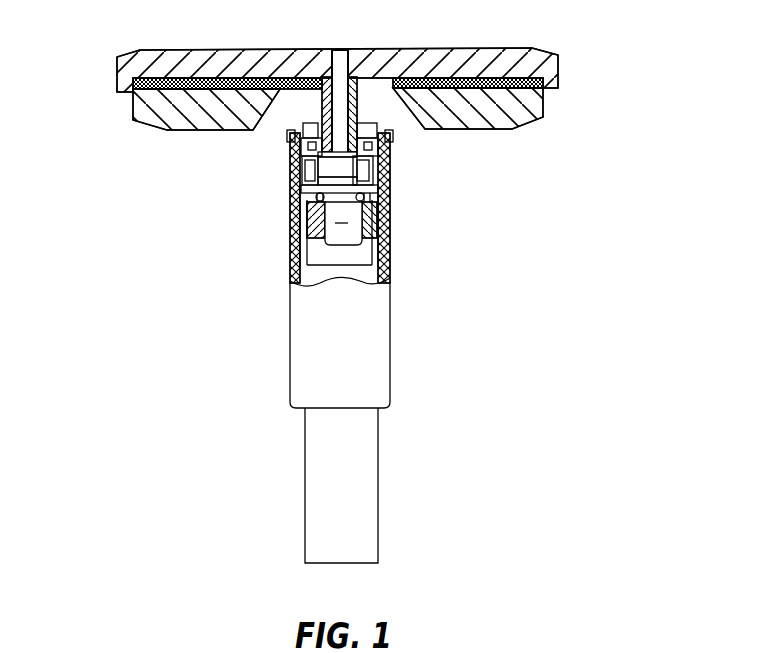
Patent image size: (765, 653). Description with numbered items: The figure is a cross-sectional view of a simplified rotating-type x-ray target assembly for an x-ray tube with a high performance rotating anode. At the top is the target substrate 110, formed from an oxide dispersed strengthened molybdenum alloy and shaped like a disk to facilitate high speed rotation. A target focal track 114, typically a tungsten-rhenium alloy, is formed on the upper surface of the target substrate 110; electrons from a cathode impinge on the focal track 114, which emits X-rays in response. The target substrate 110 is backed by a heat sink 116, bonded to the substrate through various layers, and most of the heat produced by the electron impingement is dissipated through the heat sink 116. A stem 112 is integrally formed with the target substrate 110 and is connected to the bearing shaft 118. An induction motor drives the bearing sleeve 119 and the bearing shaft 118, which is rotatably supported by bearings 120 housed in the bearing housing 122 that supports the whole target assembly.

The target substrate 110 is at (447, 50).
The stem 112 is at (323, 84).
The target focal track 114 is at (128, 52).
The heat sink 116 is at (215, 132).
The bearing shaft 118 is at (388, 193).
The bearing sleeve 119 is at (390, 340).
The bearings 120 is at (292, 200).
The bearing housing 122 is at (378, 483).